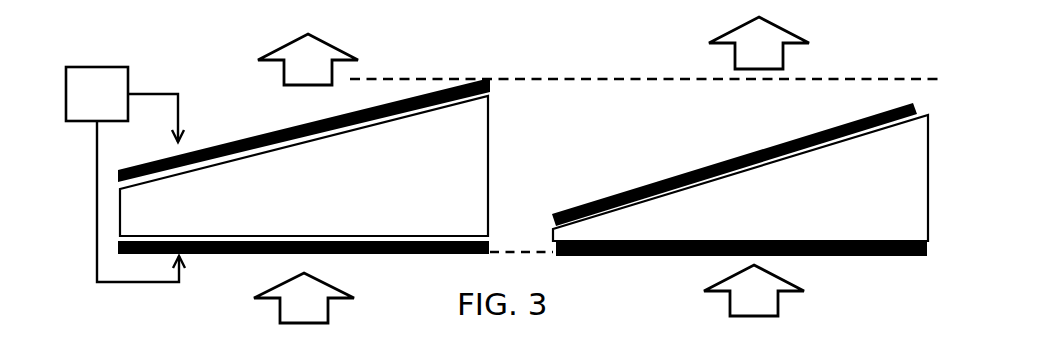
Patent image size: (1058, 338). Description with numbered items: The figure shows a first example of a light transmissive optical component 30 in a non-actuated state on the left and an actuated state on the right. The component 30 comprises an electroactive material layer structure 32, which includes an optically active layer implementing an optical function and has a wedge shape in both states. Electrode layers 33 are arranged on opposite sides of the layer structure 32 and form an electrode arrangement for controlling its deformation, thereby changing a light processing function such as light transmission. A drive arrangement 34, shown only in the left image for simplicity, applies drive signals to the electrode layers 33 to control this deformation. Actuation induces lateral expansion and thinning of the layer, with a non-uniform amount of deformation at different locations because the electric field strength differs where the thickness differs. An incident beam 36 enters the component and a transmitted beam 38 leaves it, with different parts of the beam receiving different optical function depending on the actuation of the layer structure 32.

The light transmissive optical component 30 is at (211, 53).
The electroactive material layer structure 32 is at (494, 127).
The electrode layers 33 is at (494, 86).
The drive arrangement 34 is at (93, 67).
The incident beam 36 is at (349, 296).
The transmitted beam 38 is at (336, 51).